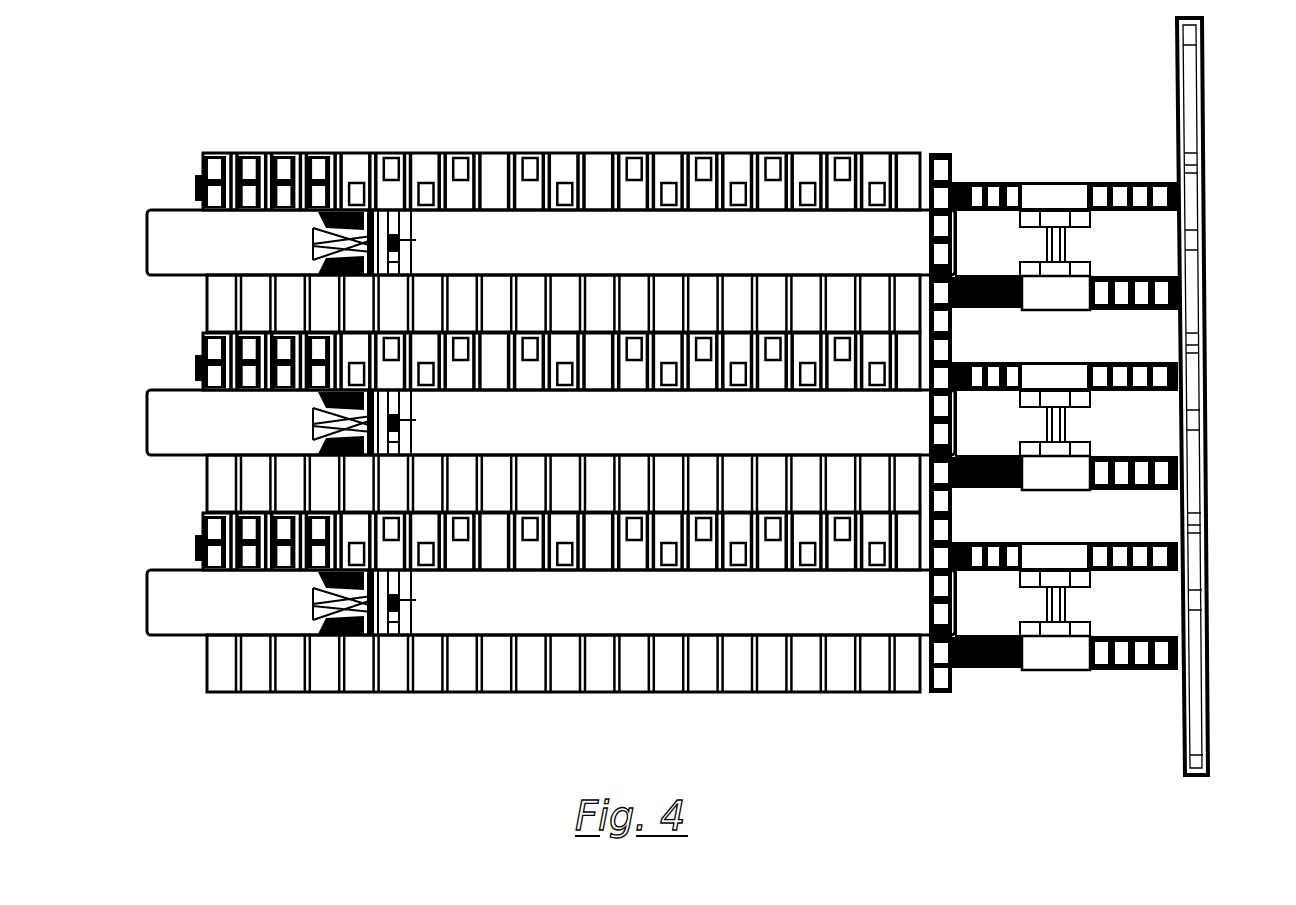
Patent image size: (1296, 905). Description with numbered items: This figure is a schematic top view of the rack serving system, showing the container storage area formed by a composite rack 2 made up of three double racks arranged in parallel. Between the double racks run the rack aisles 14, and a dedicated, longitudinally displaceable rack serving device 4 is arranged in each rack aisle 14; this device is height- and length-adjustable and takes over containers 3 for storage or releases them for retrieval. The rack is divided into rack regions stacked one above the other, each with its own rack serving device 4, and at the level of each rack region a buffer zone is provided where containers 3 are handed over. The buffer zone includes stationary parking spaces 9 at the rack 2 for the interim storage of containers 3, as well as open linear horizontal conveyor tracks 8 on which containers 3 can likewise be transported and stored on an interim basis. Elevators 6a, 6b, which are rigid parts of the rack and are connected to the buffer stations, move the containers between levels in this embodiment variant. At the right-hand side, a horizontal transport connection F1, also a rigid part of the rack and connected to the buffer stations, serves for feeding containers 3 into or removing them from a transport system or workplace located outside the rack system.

The composite rack 2 is at (198, 175).
The container 3 is at (530, 153).
The rack serving device 4 is at (416, 240).
The rack aisle 14 is at (668, 261).
The elevator 6a is at (1085, 292).
The elevator 6b is at (1070, 190).
The horizontal conveyor track 8 is at (1136, 672).
The stationary parking space 9 is at (946, 696).
The horizontal transport connection F1 is at (1208, 750).